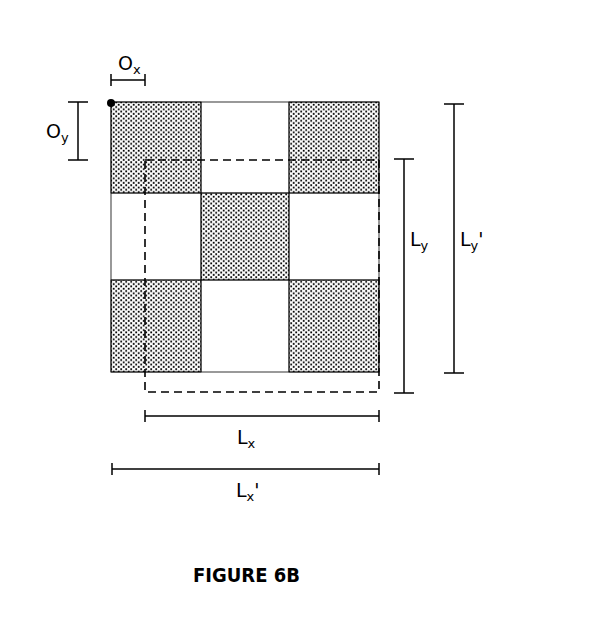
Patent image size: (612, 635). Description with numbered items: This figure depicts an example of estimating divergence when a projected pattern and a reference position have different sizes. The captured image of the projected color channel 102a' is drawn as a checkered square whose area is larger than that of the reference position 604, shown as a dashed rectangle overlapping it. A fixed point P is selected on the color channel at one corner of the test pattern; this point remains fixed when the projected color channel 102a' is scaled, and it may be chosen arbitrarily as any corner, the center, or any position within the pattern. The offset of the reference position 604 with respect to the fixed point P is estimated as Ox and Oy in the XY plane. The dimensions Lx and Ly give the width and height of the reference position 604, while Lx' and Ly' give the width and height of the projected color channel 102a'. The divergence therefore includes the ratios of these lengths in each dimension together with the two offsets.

The projected color channel 102a' is at (245, 196).
The reference position 604 is at (143, 393).
The fixed point P is at (110, 100).